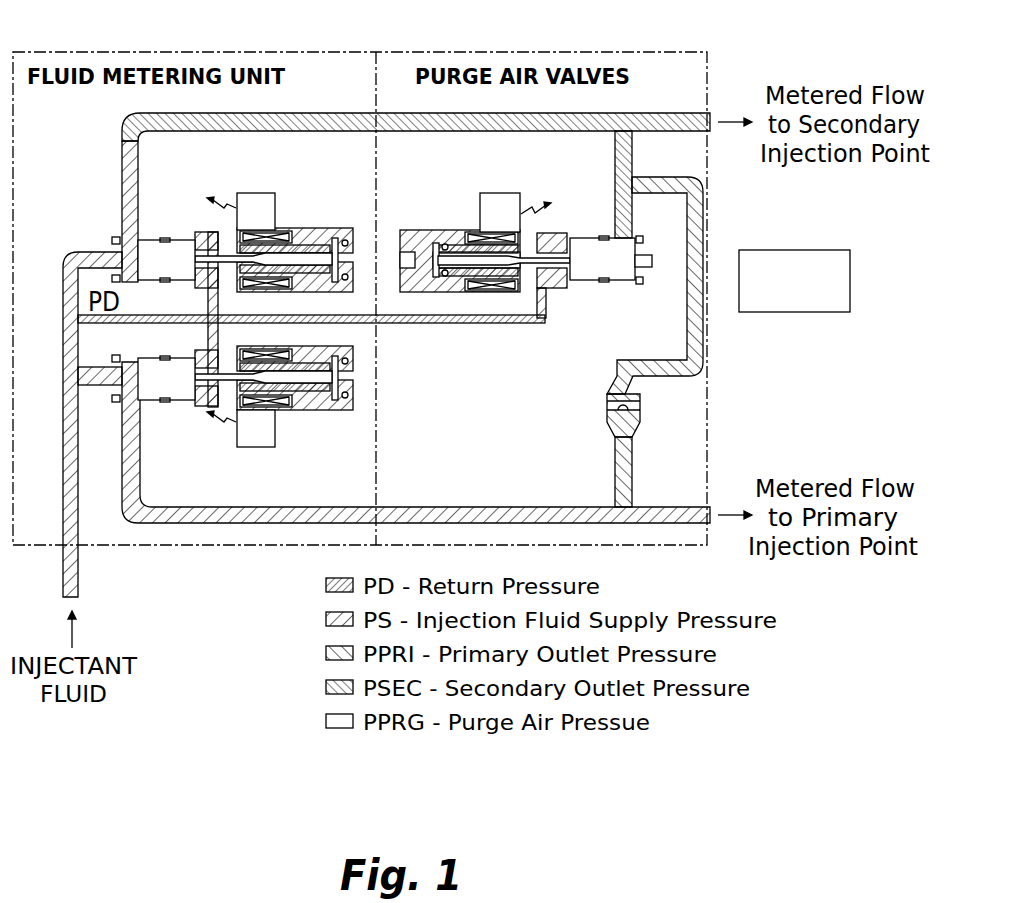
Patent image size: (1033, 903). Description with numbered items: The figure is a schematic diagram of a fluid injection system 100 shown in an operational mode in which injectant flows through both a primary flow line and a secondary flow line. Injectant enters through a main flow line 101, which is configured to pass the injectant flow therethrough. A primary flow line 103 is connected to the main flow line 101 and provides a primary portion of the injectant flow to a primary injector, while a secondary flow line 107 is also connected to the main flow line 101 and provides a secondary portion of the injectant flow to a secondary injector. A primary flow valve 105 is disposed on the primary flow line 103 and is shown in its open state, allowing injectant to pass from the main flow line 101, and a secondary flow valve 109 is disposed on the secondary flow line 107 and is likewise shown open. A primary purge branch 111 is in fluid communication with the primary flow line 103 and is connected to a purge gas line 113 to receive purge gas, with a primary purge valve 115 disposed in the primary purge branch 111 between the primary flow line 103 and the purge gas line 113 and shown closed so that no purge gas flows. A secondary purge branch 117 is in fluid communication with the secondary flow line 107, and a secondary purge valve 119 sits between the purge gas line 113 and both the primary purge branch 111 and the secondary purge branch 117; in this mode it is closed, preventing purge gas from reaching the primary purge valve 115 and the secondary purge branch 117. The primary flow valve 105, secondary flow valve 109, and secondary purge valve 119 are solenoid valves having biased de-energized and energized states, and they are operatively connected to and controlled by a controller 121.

The fluid injection system 100 is at (106, 23).
The main flow line 101 is at (67, 461).
The primary flow line 103 is at (300, 507).
The primary flow valve 105 is at (188, 392).
The secondary flow line 107 is at (326, 133).
The secondary flow valve 109 is at (188, 273).
The primary purge branch 111 is at (633, 472).
The purge gas line 113 is at (647, 282).
The primary purge valve 115 is at (634, 397).
The secondary purge branch 117 is at (615, 173).
The secondary purge valve 119 is at (623, 273).
The controller 121 is at (813, 297).